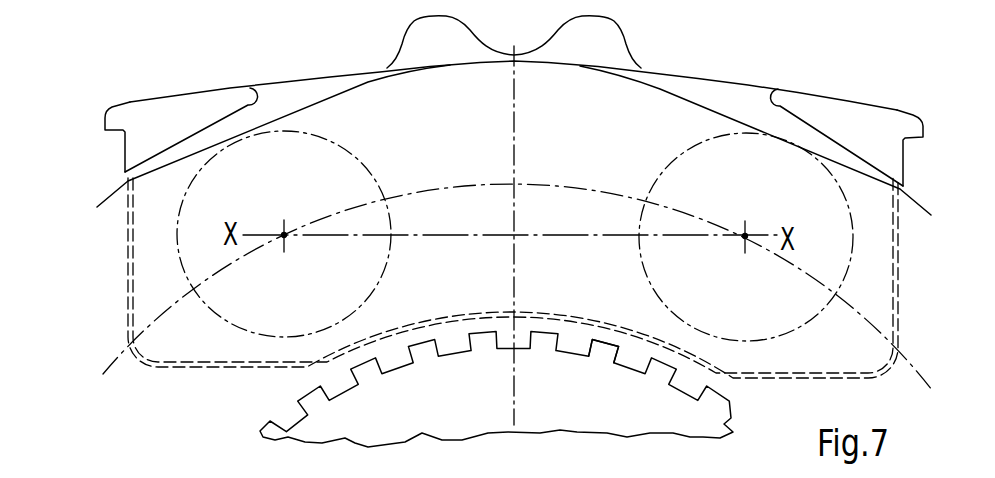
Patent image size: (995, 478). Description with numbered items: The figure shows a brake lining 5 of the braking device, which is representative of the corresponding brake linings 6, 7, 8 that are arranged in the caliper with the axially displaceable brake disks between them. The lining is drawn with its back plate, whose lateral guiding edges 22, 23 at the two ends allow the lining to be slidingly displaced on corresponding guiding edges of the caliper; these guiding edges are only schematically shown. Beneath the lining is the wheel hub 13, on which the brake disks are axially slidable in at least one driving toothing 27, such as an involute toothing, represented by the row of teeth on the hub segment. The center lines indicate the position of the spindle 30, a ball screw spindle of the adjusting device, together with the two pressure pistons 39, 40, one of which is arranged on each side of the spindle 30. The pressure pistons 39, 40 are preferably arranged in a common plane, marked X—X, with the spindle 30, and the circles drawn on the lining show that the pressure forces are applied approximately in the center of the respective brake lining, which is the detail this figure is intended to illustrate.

The brake lining 5 is at (653, 95).
The brake lining 6 is at (514, 138).
The brake lining 7 is at (513, 278).
The brake lining 8 is at (514, 42).
The wheel hub 13 is at (468, 412).
The guiding edge 22 is at (905, 148).
The guiding edge 23 is at (122, 135).
The driving toothing 27 is at (596, 342).
The spindle 30 is at (515, 233).
The pressure piston 39 is at (284, 235).
The pressure piston 40 is at (745, 236).